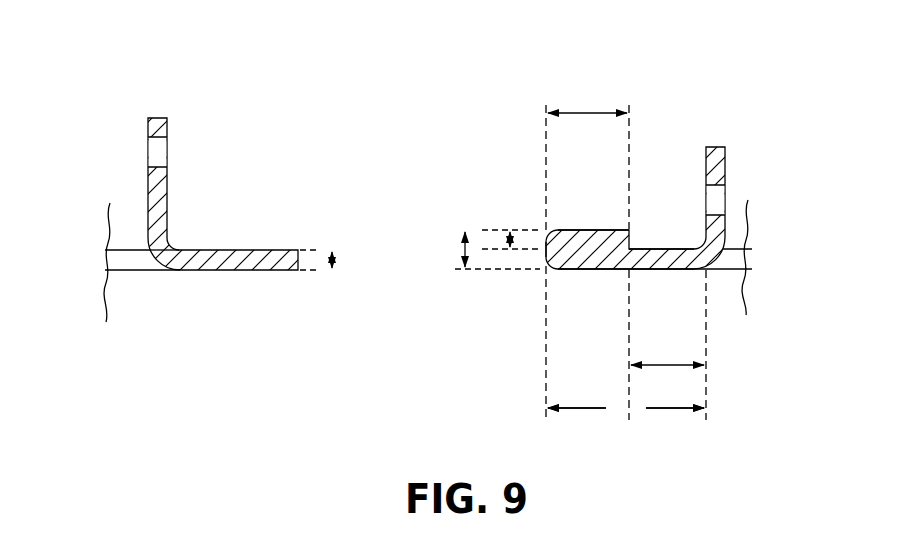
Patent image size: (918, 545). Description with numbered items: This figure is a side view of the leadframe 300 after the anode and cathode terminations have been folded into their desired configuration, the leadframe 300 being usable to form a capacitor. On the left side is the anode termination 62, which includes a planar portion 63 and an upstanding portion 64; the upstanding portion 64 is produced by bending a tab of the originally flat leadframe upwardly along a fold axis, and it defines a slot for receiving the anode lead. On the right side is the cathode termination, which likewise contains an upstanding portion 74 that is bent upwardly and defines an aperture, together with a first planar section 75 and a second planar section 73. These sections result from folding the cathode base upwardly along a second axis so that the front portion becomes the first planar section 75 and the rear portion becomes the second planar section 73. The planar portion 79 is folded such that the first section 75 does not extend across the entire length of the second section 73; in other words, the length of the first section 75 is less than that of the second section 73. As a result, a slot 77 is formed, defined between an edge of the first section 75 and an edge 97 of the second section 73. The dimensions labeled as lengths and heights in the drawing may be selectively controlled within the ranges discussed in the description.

The leadframe 300 is at (391, 128).
The anode termination 62 is at (255, 275).
The planar portion 63 is at (270, 255).
The upstanding portion 64 is at (150, 122).
The second planar section 73 is at (622, 270).
The upstanding portion 74 is at (727, 163).
The first planar section 75 is at (578, 234).
The slot 77 is at (658, 238).
The planar portion 79 is at (541, 262).
The edge 97 is at (694, 251).